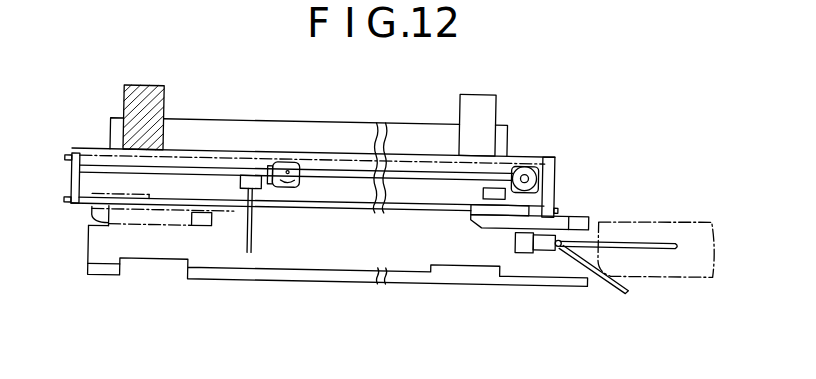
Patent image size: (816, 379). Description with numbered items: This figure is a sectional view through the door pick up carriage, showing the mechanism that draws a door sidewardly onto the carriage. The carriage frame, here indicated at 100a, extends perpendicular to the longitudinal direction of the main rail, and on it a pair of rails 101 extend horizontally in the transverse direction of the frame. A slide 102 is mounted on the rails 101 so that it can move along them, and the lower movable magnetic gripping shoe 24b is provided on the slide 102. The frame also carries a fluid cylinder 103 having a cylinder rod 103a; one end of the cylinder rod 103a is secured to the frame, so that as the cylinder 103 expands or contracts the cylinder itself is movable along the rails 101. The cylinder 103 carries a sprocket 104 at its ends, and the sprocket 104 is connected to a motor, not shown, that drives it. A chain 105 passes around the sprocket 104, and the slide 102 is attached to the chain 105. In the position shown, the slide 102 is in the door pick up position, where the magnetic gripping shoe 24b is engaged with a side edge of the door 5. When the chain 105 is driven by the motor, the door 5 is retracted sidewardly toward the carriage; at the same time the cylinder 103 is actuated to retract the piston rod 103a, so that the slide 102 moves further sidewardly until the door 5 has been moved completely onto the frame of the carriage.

The base plate 100a is at (317, 260).
The rails 101 is at (293, 208).
The slide 102 is at (492, 230).
The fluid cylinder 103 is at (332, 172).
The cylinder rod 103a is at (230, 168).
The sprocket 104 is at (531, 157).
The chain 105 is at (322, 150).
The lower movable magnetic gripping shoe 24b is at (587, 220).
The door 5 is at (647, 280).